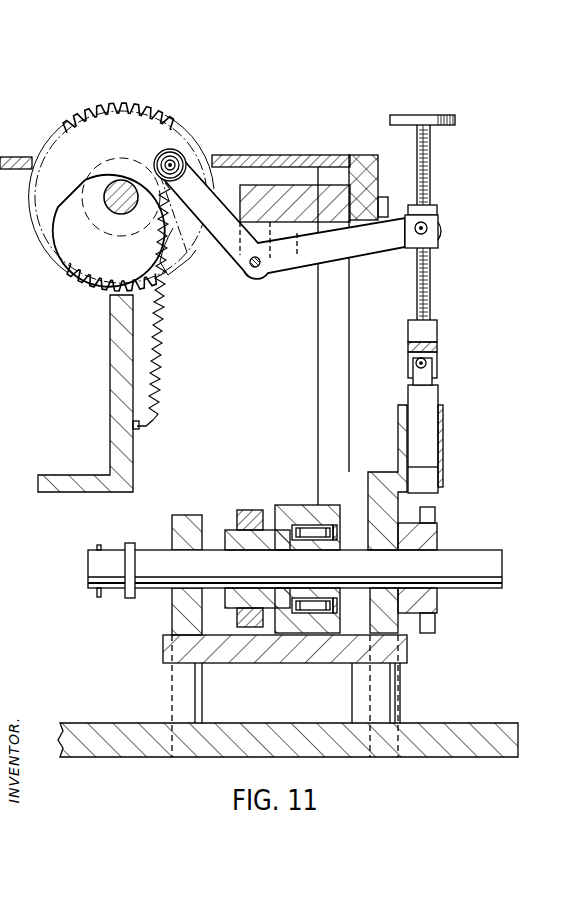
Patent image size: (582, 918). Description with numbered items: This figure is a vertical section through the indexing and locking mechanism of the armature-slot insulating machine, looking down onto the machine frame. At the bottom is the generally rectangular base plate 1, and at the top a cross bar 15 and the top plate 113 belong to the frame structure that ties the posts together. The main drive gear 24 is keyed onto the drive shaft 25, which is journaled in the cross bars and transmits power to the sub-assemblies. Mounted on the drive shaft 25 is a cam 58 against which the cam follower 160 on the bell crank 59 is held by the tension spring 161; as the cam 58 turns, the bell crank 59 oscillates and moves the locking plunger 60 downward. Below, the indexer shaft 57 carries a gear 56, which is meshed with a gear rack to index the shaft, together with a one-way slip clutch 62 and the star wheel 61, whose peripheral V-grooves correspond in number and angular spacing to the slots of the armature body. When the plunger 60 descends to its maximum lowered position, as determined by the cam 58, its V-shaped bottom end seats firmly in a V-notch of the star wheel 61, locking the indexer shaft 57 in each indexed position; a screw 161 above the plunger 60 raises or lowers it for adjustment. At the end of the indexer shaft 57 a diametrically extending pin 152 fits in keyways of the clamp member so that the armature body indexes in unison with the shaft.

The base plate 1 is at (468, 723).
The cross bar 15 is at (380, 160).
The main drive gear 24 is at (157, 111).
The drive shaft 25 is at (115, 192).
The gear 56 is at (250, 509).
The indexer shaft 57 is at (473, 550).
The cam 58 is at (190, 258).
The bell crank 59 is at (228, 243).
The locking plunger 60 is at (428, 448).
The star wheel 61 is at (438, 530).
The one-way slip clutch 62 is at (303, 505).
The top plate 113 is at (279, 155).
The pin 152 is at (98, 545).
The cam follower 160 is at (183, 152).
The tension spring 161 is at (427, 280).